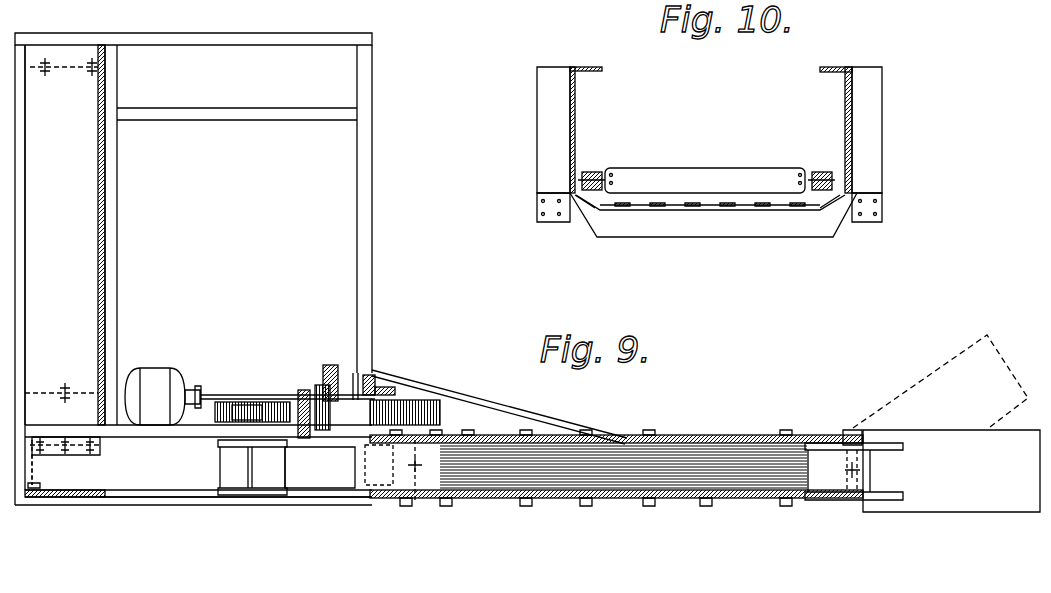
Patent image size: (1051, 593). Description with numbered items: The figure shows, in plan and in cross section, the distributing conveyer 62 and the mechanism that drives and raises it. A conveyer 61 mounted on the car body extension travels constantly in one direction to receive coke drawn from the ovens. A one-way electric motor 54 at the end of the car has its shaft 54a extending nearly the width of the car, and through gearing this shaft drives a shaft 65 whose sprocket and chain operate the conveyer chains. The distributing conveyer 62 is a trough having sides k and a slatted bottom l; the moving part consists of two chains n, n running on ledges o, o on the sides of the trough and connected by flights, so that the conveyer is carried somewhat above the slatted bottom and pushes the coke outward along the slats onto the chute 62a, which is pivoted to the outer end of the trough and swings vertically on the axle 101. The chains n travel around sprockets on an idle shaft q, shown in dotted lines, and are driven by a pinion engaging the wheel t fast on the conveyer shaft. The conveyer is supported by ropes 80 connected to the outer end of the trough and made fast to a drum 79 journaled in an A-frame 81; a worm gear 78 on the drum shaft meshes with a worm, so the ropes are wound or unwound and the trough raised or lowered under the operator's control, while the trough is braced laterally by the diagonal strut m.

In FIG. 9, the conveyer 61 is at (100, 468).
In FIG. 9, the shaft 65 is at (55, 386).
In FIG. 9, the one-way electric motor 54 is at (250, 396).
In FIG. 9, the motor shaft 54a is at (252, 399).
In FIG. 9, the worm gear 78 is at (232, 420).
In FIG. 9, the drum 79 is at (280, 468).
In FIG. 9, the A-frame 81 is at (180, 500).
In FIG. 9, the idle shaft q is at (36, 470).
In FIG. 9, the diagonal strut m is at (452, 382).
In FIG. 9, the wheel t is at (418, 425).
In FIG. 9, the ropes 80 is at (672, 440).
In FIG. 9, the slatted bottom l is at (605, 505).
In FIG. 10, the slatted bottom l is at (690, 208).
In FIG. 9, the axle 101 is at (852, 430).
In FIG. 9, the chute 62a is at (932, 500).
In FIG. 10, the sides k is at (570, 128).
In FIG. 10, the conveyer chains n is at (597, 171).
In FIG. 10, the distributing conveyer 62 is at (672, 175).
In FIG. 10, the ledges o is at (585, 198).